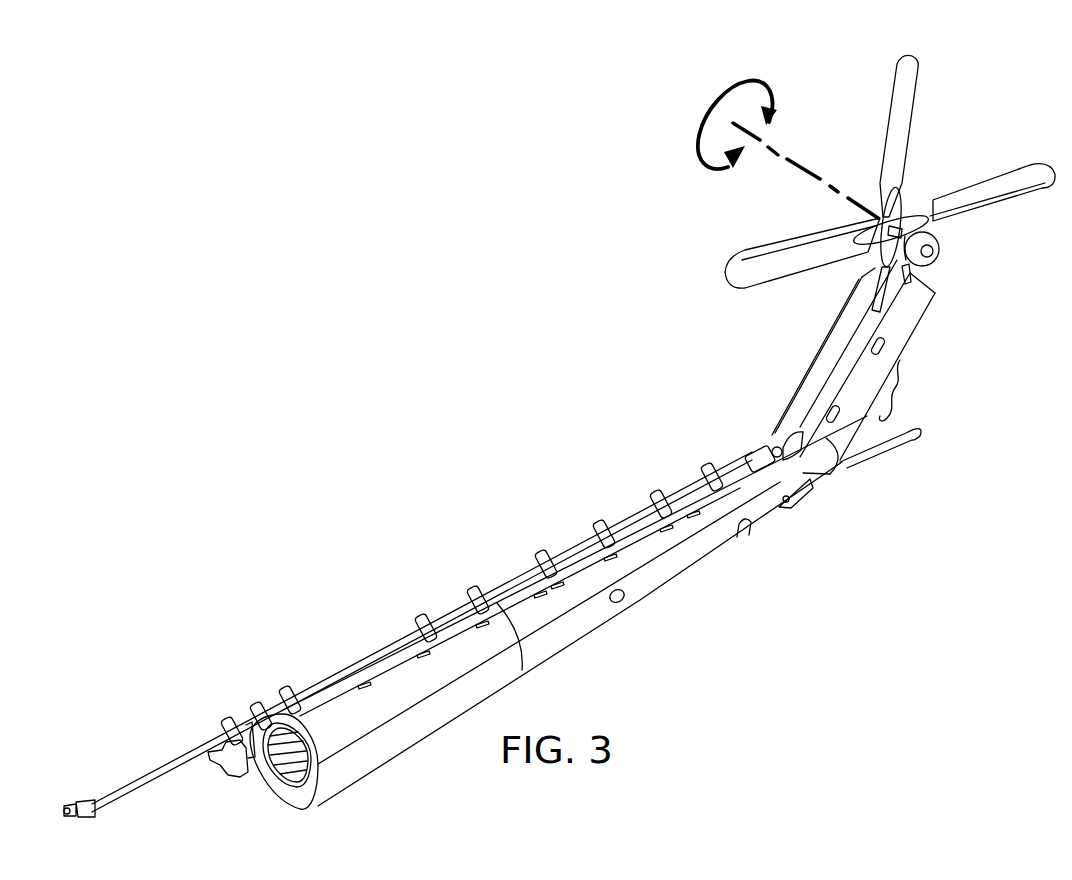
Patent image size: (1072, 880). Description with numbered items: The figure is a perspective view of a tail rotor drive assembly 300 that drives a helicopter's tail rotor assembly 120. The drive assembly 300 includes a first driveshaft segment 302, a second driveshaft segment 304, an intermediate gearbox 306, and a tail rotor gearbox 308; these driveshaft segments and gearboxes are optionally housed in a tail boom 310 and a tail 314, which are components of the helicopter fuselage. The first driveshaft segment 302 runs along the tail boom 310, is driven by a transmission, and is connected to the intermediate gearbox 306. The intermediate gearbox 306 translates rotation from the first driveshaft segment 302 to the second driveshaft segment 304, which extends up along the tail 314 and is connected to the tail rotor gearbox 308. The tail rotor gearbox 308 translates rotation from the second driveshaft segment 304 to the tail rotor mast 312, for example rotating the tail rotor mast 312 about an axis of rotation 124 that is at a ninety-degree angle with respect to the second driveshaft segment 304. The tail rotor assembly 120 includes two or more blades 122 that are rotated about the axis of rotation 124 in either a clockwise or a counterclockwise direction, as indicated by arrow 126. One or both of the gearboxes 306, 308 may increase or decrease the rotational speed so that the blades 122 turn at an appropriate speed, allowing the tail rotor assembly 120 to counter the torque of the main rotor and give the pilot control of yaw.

The tail rotor assembly 120 is at (951, 108).
The blades 122 is at (883, 88).
The axis of rotation 124 is at (807, 167).
The arrow 126 is at (752, 78).
The tail rotor drive assembly 300 is at (530, 482).
The first driveshaft segment 302 is at (427, 620).
The second driveshaft segment 304 is at (852, 327).
The intermediate gearbox 306 is at (772, 433).
The tail rotor gearbox 308 is at (940, 250).
The tail boom 310 is at (557, 657).
The tail rotor mast 312 is at (920, 207).
The tail 314 is at (912, 338).